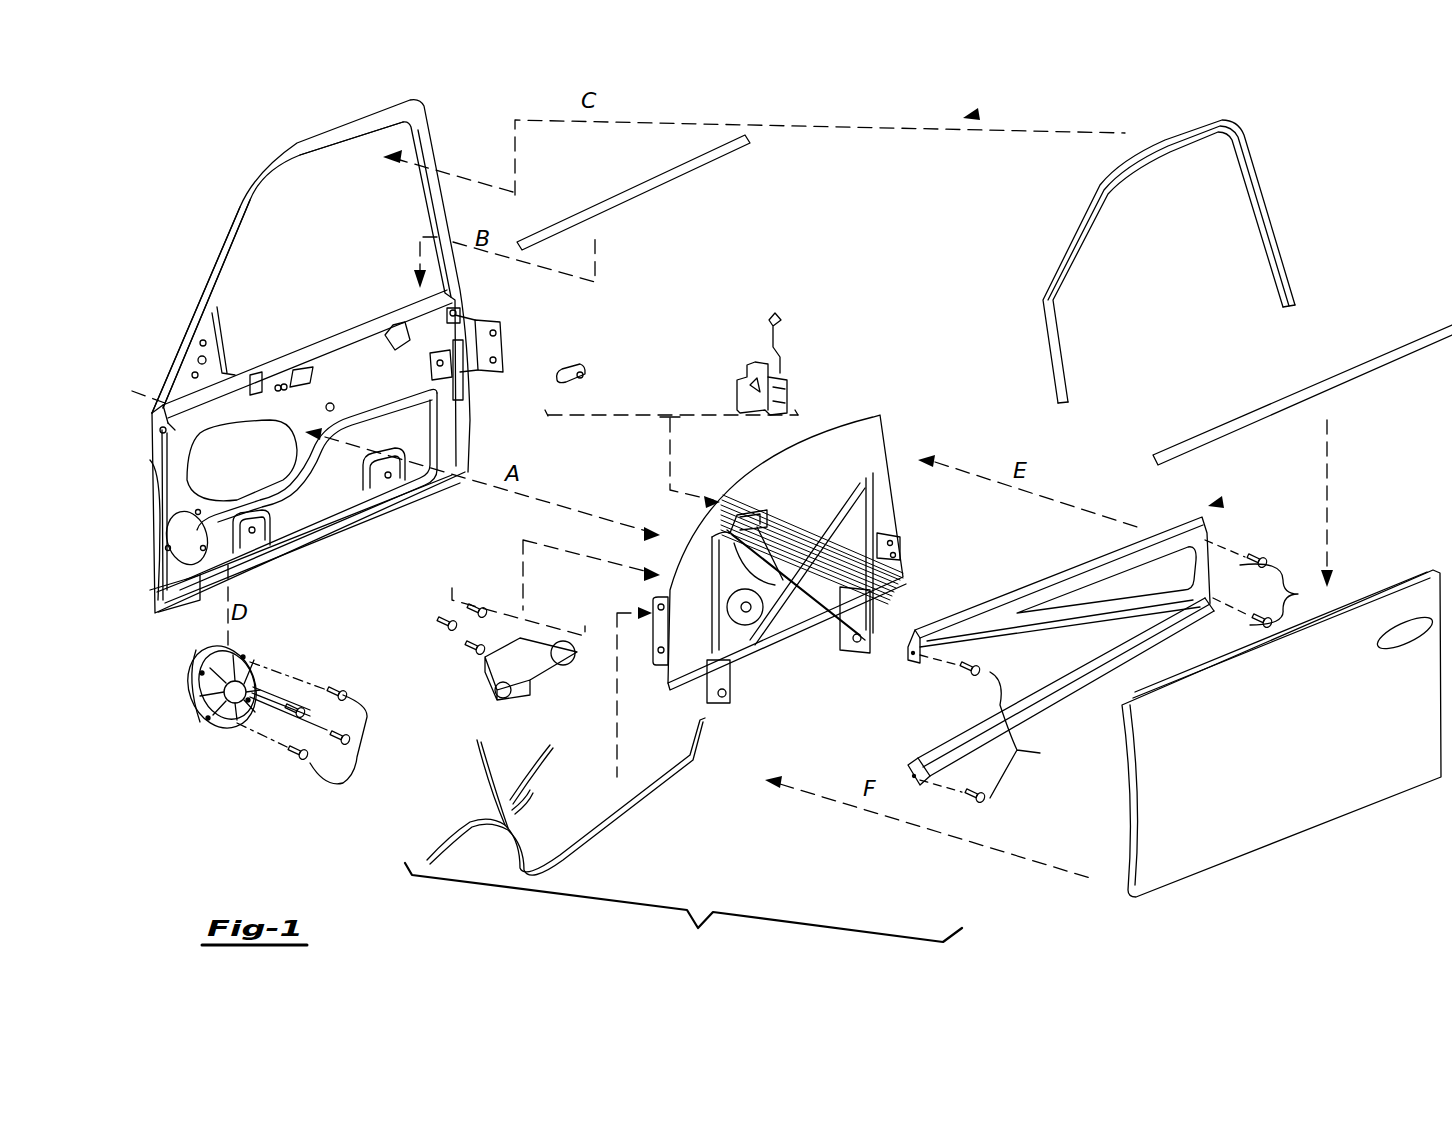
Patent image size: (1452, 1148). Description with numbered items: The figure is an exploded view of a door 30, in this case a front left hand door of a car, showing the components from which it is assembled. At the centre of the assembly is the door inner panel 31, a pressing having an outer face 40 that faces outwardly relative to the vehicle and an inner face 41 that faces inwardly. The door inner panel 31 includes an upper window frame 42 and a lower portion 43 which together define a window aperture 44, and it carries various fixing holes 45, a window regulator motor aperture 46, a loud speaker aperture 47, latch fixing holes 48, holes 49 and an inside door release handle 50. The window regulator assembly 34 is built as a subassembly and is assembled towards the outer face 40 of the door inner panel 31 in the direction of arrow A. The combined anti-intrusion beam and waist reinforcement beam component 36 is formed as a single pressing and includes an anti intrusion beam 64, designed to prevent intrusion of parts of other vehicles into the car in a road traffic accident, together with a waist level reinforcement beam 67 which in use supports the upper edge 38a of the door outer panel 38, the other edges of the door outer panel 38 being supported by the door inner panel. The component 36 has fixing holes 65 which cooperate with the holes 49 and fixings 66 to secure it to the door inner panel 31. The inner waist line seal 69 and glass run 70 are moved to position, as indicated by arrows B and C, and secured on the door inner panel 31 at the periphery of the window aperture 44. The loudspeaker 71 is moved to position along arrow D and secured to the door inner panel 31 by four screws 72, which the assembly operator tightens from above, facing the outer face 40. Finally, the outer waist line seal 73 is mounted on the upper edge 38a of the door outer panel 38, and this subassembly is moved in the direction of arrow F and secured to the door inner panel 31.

The door 30 is at (968, 116).
The door inner panel 31 is at (319, 266).
The window regulator assembly 34 is at (683, 912).
The combined anti-intrusion beam and waist reinforcement beam component 36 is at (1212, 503).
The door outer panel 38 is at (1281, 736).
The upper edge of door outer panel 38a is at (1357, 593).
The outer face 40 is at (325, 349).
The inner face 41 is at (137, 399).
The upper window frame 42 is at (340, 133).
The lower portion 43 is at (150, 465).
The window aperture 44 is at (270, 263).
The fixing holes 45 is at (395, 343).
The window regulator motor aperture 46 is at (250, 474).
The loud speaker aperture 47 is at (153, 588).
The latch fixing holes 48 is at (433, 368).
The holes 49 is at (470, 318).
The inside door release handle 50 is at (300, 372).
The anti intrusion beam 64 is at (1063, 703).
The fixing holes 65 is at (1203, 540).
The fixings 66 is at (1159, 681).
The upper guide rail 67 is at (1082, 573).
The inner waist line seal 69 is at (637, 195).
The glass run 70 is at (1227, 120).
The loudspeaker 71 is at (187, 690).
The screws 72 is at (357, 783).
The outer waist line seal 73 is at (1405, 362).